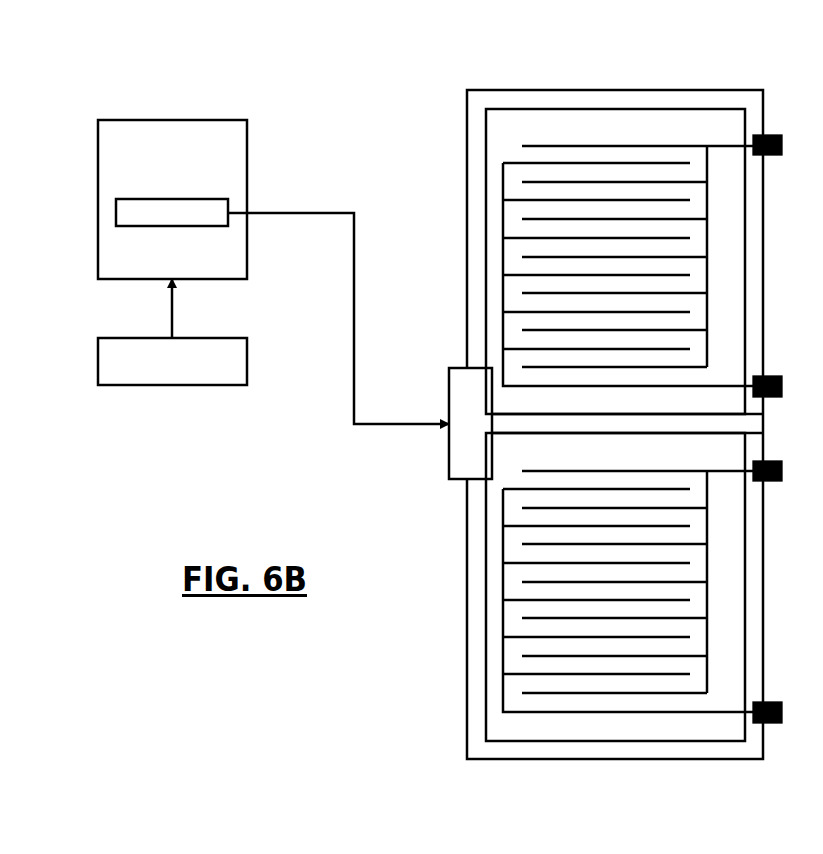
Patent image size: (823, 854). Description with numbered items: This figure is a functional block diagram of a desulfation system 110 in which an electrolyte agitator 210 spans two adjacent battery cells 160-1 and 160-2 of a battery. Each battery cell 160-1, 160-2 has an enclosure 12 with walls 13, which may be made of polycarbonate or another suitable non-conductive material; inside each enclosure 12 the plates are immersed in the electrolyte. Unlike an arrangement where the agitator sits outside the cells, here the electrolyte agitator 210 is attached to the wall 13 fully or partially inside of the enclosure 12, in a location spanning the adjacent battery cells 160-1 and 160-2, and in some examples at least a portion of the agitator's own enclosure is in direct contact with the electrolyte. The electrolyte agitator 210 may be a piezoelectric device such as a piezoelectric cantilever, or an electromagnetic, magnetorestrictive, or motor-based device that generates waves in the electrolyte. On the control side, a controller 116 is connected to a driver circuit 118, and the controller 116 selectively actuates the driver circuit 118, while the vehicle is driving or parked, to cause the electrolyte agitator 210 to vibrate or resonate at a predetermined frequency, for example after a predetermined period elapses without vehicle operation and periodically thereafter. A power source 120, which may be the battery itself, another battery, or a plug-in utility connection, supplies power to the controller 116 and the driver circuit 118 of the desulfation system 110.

The desulfation system 110 is at (134, 171).
The controller 116 is at (134, 120).
The driver circuit 118 is at (116, 213).
The power source 120 is at (172, 385).
The electrolyte agitator 210 is at (449, 460).
The battery cell 160-1 is at (547, 375).
The battery cell 160-2 is at (427, 655).
The enclosure 12 is at (445, 118).
The wall 13 is at (467, 177).